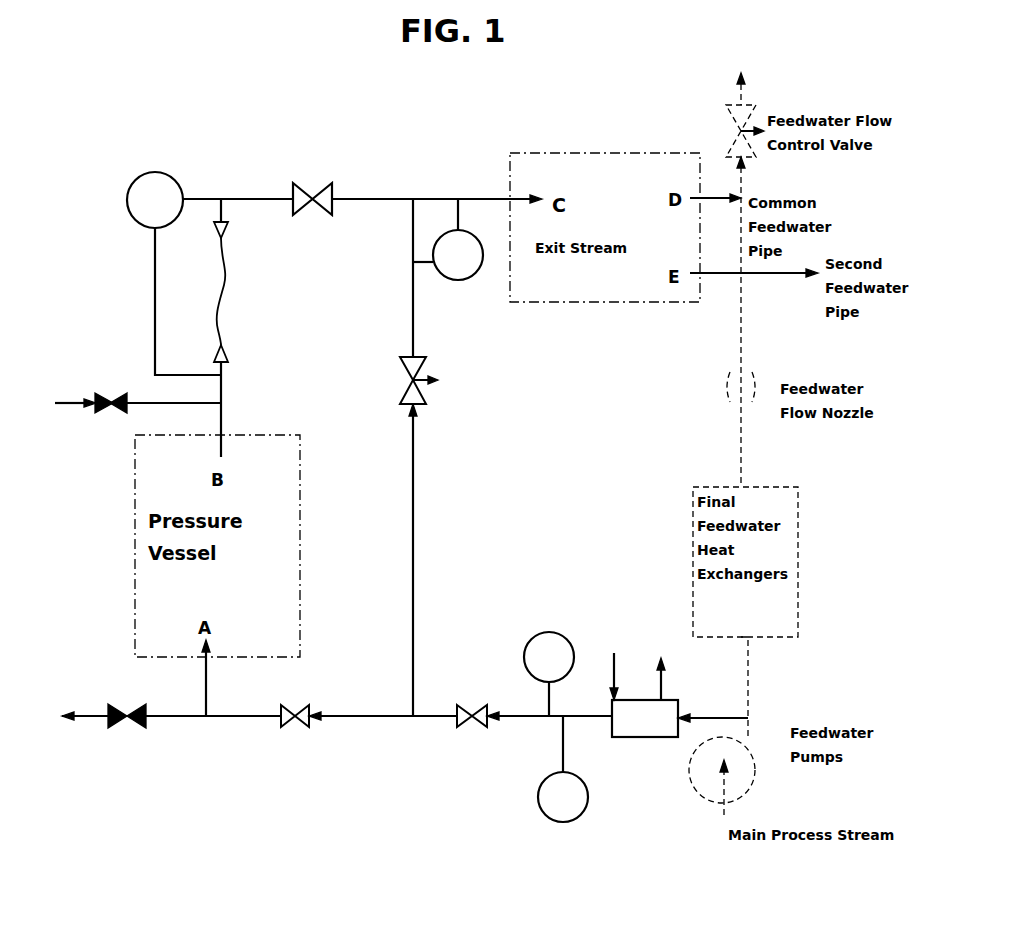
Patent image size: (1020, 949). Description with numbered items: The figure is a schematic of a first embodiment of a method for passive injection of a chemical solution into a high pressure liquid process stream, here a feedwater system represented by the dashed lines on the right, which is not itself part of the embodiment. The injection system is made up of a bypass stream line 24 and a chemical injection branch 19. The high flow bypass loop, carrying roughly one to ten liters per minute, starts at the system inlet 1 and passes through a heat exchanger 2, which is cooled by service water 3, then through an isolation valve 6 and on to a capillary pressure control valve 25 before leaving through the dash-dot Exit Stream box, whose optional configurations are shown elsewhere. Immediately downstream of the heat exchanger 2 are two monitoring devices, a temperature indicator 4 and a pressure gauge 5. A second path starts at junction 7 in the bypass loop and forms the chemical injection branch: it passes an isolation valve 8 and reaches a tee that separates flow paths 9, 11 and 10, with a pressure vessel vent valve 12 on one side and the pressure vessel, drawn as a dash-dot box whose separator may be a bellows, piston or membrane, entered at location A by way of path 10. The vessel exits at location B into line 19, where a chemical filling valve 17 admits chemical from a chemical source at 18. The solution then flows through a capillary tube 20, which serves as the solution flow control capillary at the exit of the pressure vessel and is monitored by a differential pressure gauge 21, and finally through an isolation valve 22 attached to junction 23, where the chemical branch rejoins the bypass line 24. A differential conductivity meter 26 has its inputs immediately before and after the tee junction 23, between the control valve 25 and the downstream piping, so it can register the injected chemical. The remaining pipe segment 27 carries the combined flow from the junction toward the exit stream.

The system inlet 1 is at (729, 714).
The heat exchanger 2 is at (645, 718).
The service water 3 is at (637, 676).
The temperature indicator 4 is at (588, 797).
The pressure gauge 5 is at (556, 633).
The isolation valve 6 is at (487, 729).
The junction 7 is at (415, 723).
The isolation valve 8 is at (310, 729).
The flow path 9 is at (234, 722).
The flow path 10 is at (210, 683).
The flow path 11 is at (173, 722).
The pressure vessel vent valve 12 is at (140, 724).
The chemical filling valve 17 is at (112, 416).
The chemical source 18 is at (65, 395).
The chemical injection branch line 19 is at (222, 405).
The capillary tube 20 is at (228, 305).
The differential pressure gauge 21 is at (148, 174).
The isolation valve 22 is at (322, 188).
The junction 23 is at (408, 196).
The bypass stream line 24 is at (415, 516).
The capillary pressure control valve 25 is at (428, 404).
The differential conductivity meter 26 is at (466, 280).
The exit pipe 27 is at (480, 196).